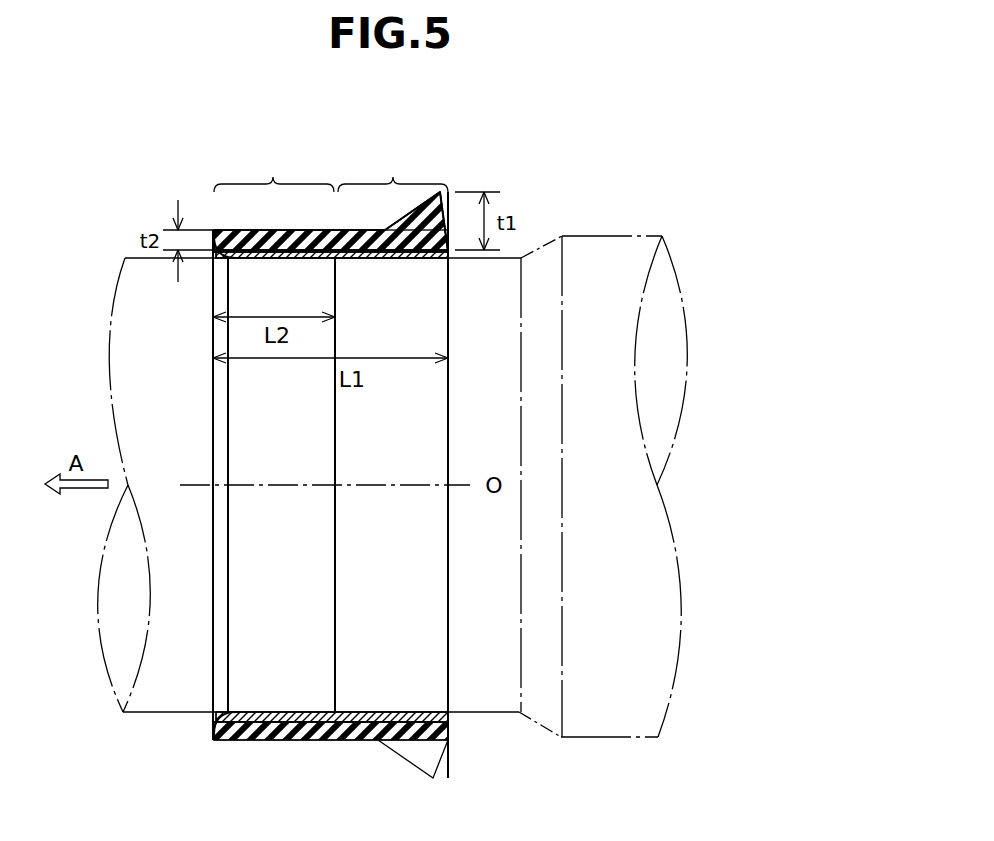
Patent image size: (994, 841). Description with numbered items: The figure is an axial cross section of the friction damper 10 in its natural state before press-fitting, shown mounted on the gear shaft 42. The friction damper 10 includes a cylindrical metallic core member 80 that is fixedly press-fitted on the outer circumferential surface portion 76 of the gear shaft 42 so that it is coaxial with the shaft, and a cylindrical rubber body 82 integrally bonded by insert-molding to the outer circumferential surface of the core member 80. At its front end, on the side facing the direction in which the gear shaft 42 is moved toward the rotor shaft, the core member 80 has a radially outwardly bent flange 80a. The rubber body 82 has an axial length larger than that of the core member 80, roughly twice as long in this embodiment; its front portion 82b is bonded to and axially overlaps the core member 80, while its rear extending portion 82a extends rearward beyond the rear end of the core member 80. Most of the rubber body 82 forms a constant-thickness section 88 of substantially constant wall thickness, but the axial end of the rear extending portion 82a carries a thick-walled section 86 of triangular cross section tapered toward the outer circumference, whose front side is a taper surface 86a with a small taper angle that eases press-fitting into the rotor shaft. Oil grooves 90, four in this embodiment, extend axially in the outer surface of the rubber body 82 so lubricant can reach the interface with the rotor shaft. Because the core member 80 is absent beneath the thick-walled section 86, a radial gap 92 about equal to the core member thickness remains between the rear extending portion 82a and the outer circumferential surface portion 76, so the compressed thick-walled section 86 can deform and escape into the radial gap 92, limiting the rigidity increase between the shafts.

The friction damper 10 is at (522, 166).
The gear shaft 42 is at (565, 757).
The outer circumferential surface portion of the gear shaft 76 is at (476, 695).
The core member 80 is at (262, 720).
The flange 80a is at (214, 724).
The rubber body 82 is at (315, 467).
The rear extending portion 82a is at (393, 172).
The front portion 82b is at (274, 172).
The thick-walled section 86 is at (437, 225).
The taper surface 86a is at (400, 222).
The constant-thickness section 88 is at (306, 236).
The oil grooves 90 is at (323, 738).
The radial gap 92 is at (378, 720).